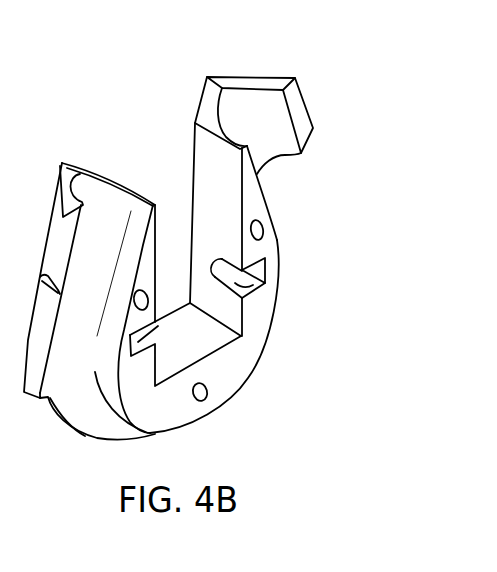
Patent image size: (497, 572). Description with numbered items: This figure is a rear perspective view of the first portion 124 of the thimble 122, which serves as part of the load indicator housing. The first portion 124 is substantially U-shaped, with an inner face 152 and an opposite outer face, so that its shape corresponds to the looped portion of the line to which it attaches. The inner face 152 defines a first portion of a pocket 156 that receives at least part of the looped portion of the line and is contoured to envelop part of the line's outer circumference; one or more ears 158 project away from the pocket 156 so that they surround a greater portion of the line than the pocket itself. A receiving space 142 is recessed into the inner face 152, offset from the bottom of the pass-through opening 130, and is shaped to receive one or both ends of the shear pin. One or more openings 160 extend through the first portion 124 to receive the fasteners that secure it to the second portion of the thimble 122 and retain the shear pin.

The thimble 122 is at (262, 233).
The first portion 124 is at (292, 268).
The pass-through opening 130 is at (150, 132).
The receiving space 142 is at (263, 292).
The inner face 152 is at (244, 358).
The pocket 156 is at (292, 172).
The ears 158 is at (292, 152).
The openings 160 is at (207, 393).